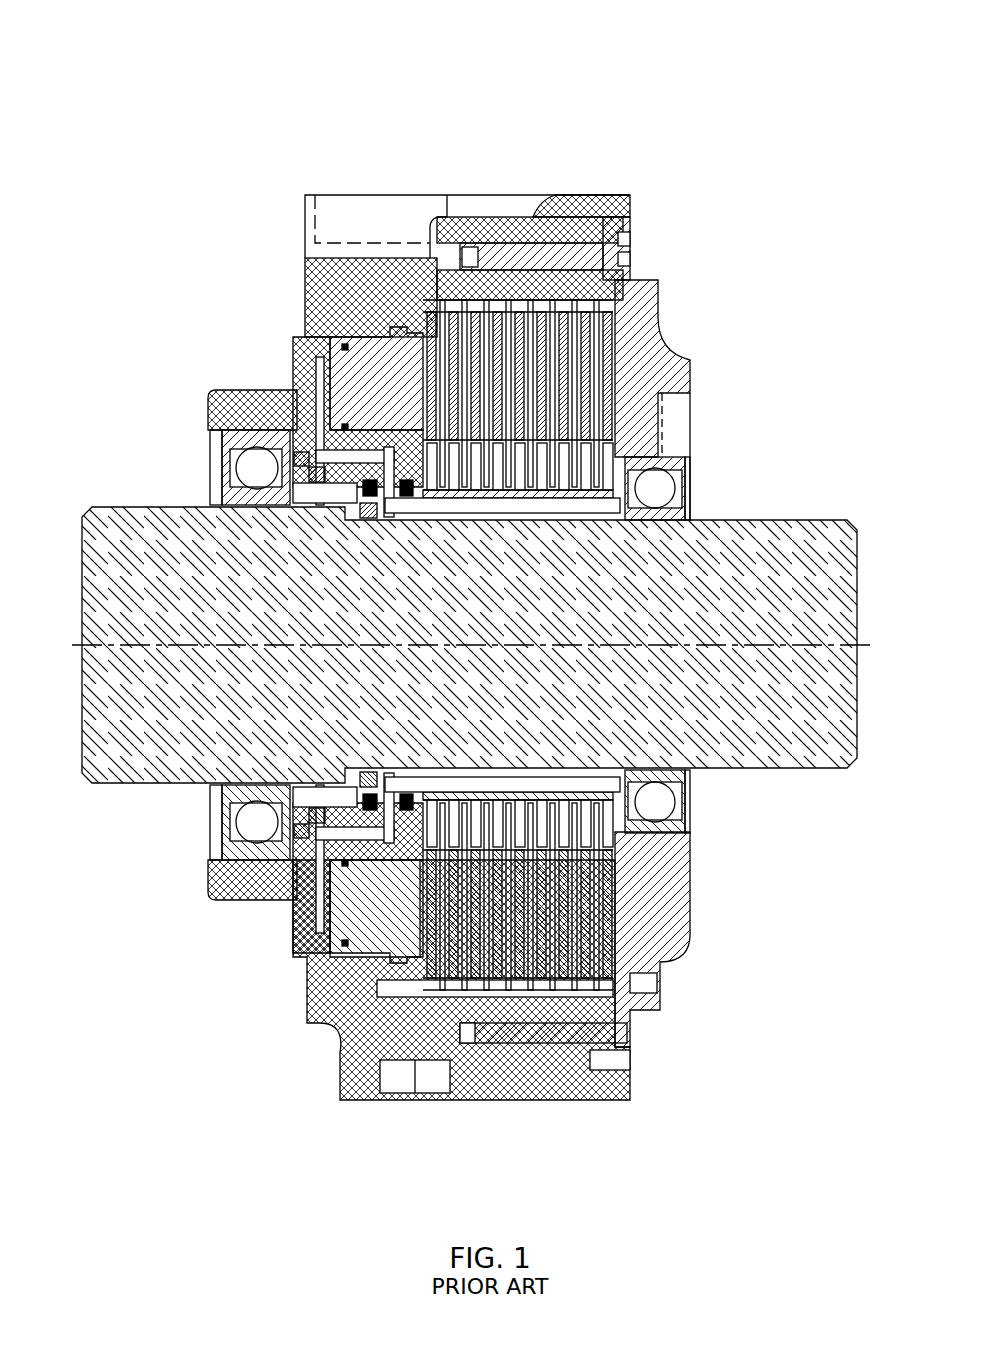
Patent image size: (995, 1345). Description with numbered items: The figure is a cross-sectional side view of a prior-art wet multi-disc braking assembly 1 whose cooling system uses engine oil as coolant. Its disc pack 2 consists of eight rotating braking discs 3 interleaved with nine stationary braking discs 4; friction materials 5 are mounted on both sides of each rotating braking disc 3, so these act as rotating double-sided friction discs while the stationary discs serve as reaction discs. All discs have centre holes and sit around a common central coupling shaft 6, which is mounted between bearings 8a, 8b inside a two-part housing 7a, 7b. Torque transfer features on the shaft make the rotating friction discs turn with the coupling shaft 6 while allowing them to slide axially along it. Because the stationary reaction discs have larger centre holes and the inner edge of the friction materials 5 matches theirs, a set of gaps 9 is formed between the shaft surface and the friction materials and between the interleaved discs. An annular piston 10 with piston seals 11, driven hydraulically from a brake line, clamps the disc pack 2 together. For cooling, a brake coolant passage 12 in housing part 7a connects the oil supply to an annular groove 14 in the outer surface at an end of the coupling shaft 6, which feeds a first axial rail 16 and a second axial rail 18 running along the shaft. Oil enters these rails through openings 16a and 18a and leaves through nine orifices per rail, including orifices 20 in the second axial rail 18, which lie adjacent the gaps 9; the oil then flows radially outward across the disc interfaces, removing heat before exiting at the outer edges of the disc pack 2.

The multi-disc braking assembly 1 is at (712, 80).
The disc pack 2 is at (645, 350).
The rotating braking disc 3 is at (437, 300).
The stationary braking disc 4 is at (423, 310).
The friction material 5 is at (606, 318).
The coupling shaft 6 is at (232, 548).
The housing part 7a is at (340, 1060).
The housing part 7b is at (660, 960).
The bearing 8a is at (222, 832).
The bearing 8b is at (670, 810).
The gap 9 is at (310, 320).
The annular piston 10 is at (297, 935).
The piston seal 11 is at (243, 895).
The brake coolant passage 12 is at (303, 378).
The annular groove 14 is at (240, 392).
The first axial rail 16 is at (628, 492).
The opening 16a is at (392, 527).
The second axial rail 18 is at (645, 775).
The opening 18a is at (345, 740).
The orifices 20 is at (705, 930).